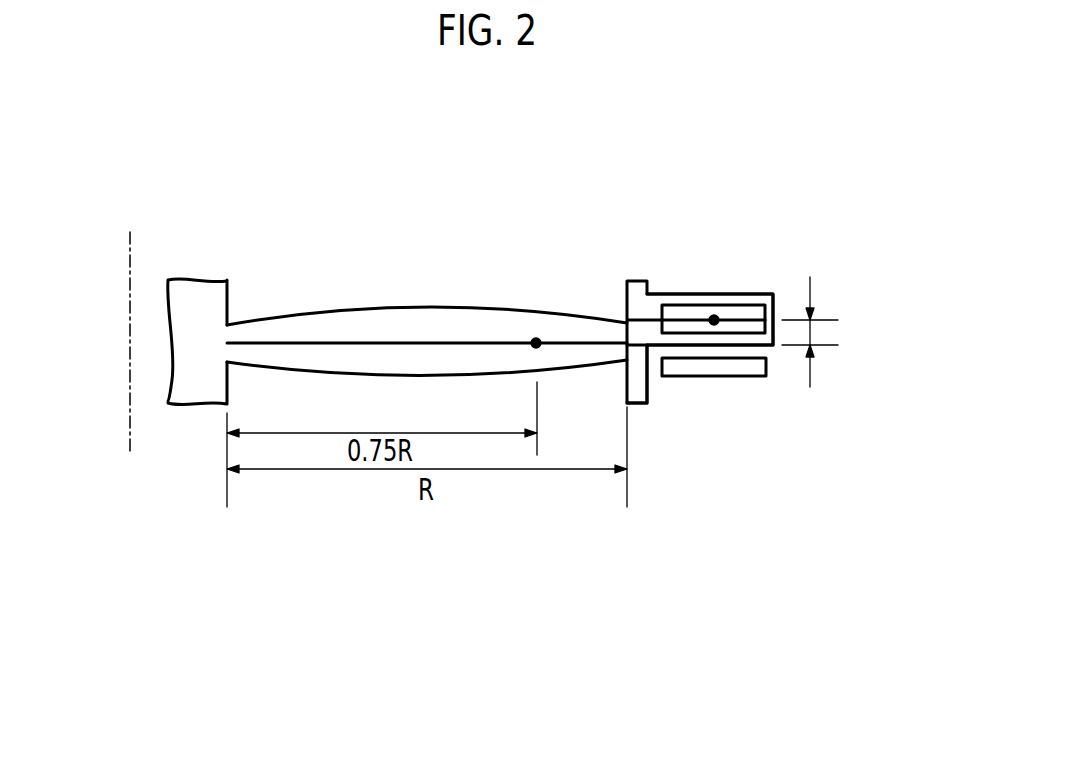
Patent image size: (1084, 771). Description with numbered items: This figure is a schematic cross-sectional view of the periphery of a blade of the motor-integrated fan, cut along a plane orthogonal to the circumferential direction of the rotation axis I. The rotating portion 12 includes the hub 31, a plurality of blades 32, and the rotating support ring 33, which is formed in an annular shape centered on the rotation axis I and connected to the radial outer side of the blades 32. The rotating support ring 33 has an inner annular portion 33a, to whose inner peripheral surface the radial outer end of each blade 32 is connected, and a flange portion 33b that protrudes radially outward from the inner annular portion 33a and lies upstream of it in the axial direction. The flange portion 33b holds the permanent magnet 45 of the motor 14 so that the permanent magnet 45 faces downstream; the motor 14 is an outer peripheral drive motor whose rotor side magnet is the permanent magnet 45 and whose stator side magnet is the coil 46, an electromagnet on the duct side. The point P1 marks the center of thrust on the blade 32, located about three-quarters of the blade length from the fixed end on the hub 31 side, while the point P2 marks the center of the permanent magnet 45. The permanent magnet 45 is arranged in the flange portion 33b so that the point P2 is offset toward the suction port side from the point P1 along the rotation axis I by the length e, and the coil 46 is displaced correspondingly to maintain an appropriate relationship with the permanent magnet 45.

The rotating portion 12 is at (438, 152).
The hub 31 is at (234, 288).
The blade 32 is at (425, 306).
The rotating support ring 33 is at (636, 276).
The inner annular portion 33a is at (645, 404).
The flange portion 33b is at (730, 293).
The permanent magnet 45 is at (758, 304).
The coil 46 is at (766, 366).
The motor 14 is at (764, 412).
The point P1 is at (536, 338).
The point P2 is at (713, 314).
The rotation axis I is at (130, 240).
The offset length e is at (812, 330).